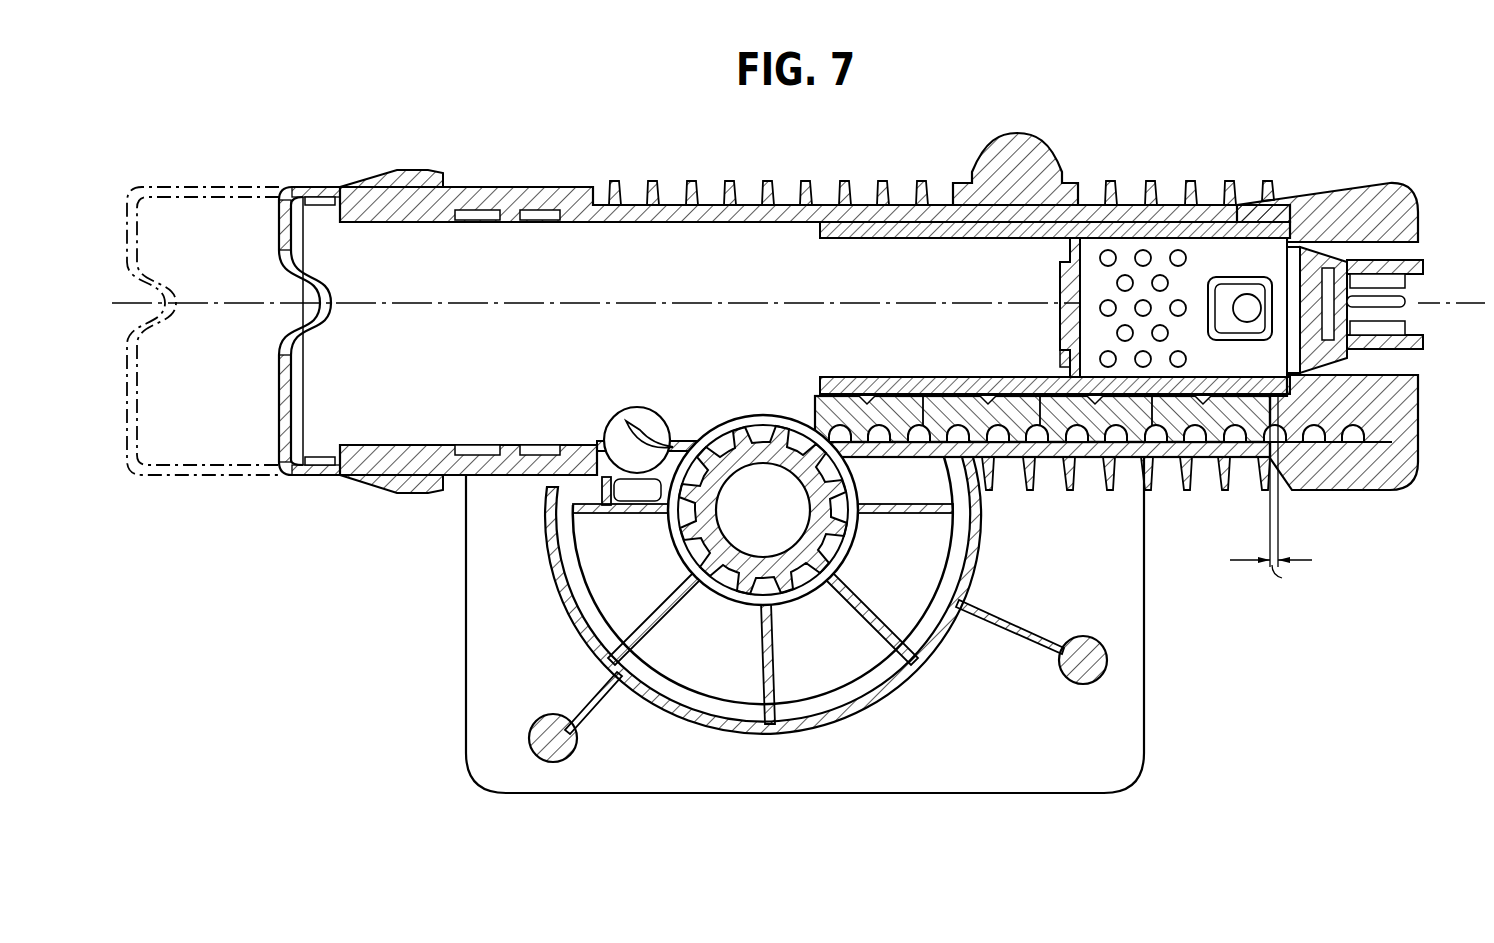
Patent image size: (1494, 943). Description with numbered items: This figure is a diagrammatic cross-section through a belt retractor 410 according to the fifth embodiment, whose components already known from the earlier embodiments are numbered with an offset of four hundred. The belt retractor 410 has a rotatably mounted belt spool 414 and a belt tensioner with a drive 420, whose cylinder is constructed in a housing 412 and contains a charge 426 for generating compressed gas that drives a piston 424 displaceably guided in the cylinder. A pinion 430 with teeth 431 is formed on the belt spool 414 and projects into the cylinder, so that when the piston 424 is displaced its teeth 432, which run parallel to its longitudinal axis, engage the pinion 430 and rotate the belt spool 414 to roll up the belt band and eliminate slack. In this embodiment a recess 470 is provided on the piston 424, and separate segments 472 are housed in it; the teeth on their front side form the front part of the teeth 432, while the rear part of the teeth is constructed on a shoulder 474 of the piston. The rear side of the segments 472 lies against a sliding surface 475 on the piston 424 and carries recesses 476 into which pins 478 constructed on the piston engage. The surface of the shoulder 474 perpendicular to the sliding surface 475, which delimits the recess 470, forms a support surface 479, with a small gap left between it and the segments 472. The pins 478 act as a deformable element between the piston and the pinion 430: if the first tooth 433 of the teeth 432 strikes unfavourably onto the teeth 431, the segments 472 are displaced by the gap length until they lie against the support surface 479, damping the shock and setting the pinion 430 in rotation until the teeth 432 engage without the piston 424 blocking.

The belt retractor 410 is at (496, 742).
The housing 412 is at (727, 605).
The belt spool 414 is at (600, 565).
The drive 420 is at (625, 143).
The piston 424 is at (1133, 222).
The charge 426 is at (1197, 258).
The pinion 430 is at (783, 575).
The teeth of the pinion 431 is at (717, 433).
The teeth 432 is at (1340, 440).
The first tooth 433 is at (800, 452).
The recess 470 is at (917, 390).
The segments 472 is at (967, 420).
The shoulder 474 is at (1395, 405).
The sliding surface 475 is at (893, 400).
The recesses 476 is at (978, 407).
The pins 478 is at (1095, 403).
The support surface 479 is at (1280, 433).